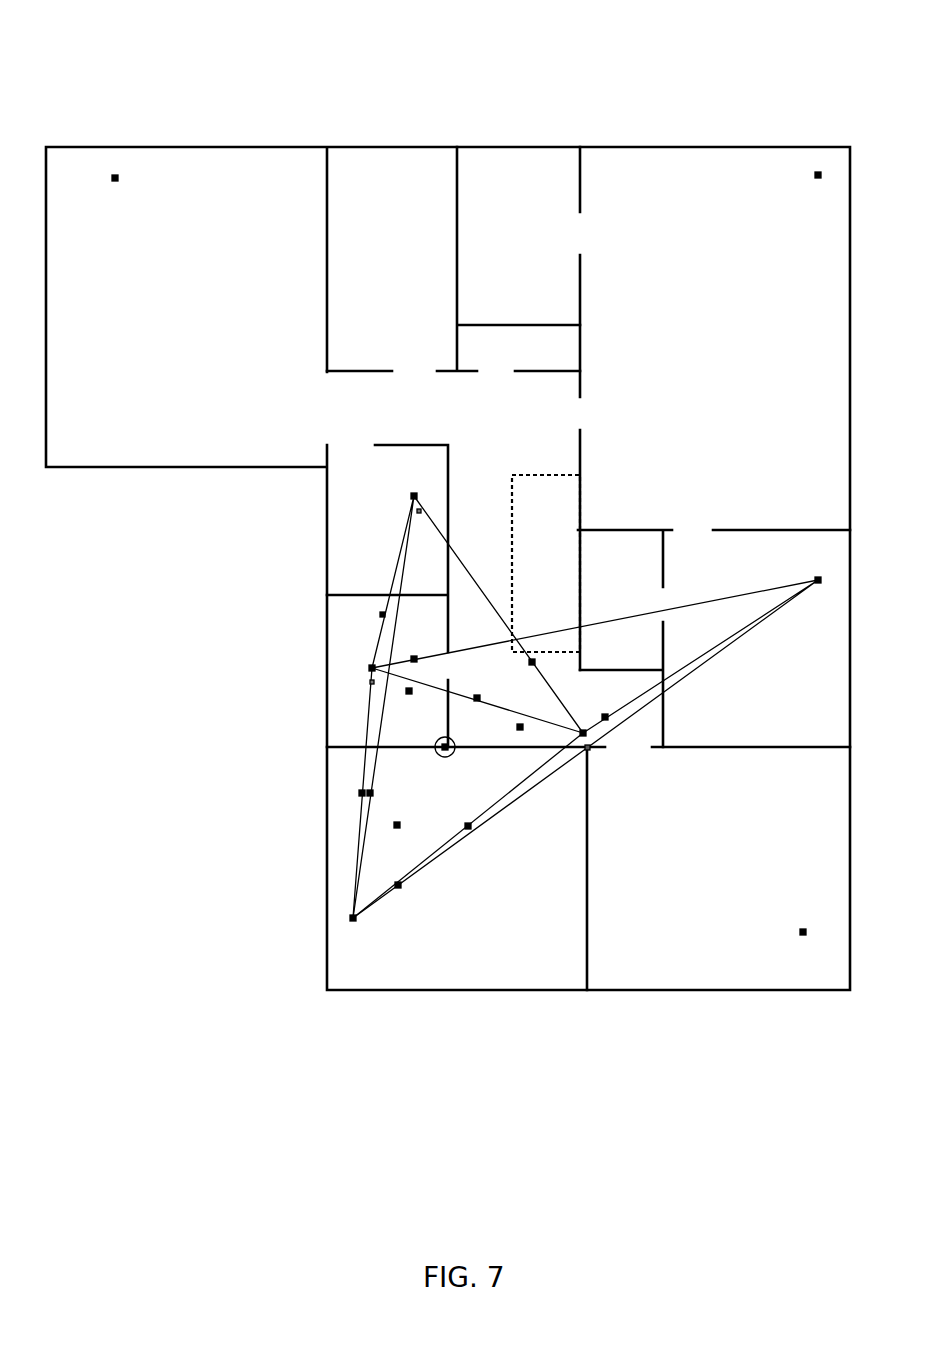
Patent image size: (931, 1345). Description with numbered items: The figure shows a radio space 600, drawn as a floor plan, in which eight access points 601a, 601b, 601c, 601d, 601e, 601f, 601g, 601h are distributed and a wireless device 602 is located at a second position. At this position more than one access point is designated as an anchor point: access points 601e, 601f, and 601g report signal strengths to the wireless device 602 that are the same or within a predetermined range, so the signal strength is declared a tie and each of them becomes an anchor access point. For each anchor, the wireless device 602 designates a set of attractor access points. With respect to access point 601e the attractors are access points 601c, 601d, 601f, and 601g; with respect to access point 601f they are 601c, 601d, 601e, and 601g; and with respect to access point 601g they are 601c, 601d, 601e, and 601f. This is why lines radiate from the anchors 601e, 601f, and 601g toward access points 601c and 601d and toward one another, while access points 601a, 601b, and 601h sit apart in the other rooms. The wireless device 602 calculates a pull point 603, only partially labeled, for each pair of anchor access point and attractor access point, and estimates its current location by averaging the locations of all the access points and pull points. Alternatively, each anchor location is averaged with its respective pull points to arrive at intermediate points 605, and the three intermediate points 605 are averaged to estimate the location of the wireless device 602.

The radio space 600 is at (318, 71).
The access point 601a is at (118, 178).
The access point 601b is at (813, 177).
The access point 601c is at (411, 493).
The access point 601d is at (814, 577).
The access point 601e is at (370, 664).
The access point 601f is at (357, 918).
The access point 601g is at (586, 735).
The access point 601h is at (801, 930).
The wireless device 602 is at (449, 754).
The pull point 603 is at (528, 664).
The intermediate point 605 is at (409, 695).